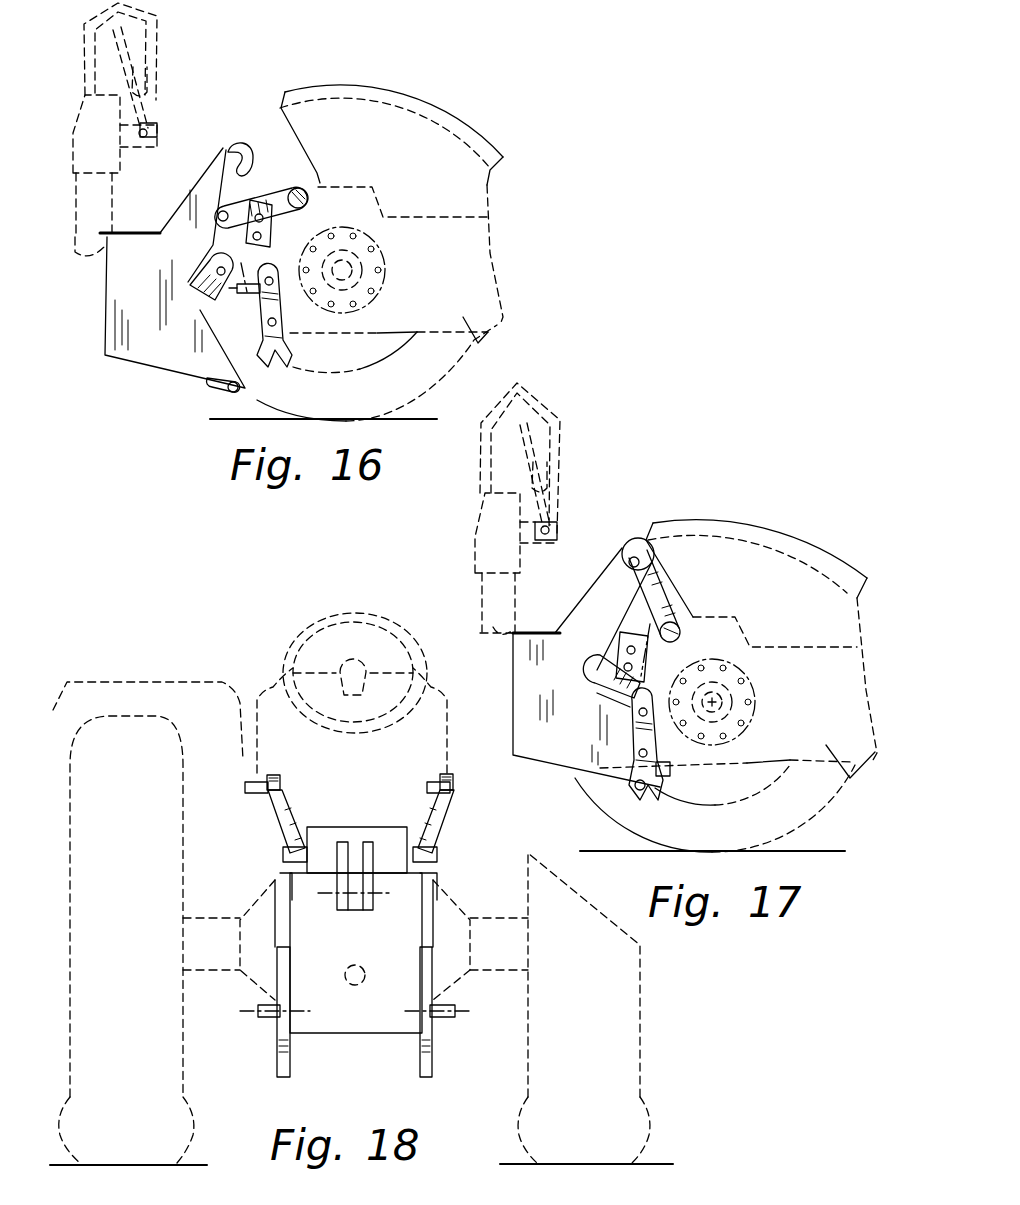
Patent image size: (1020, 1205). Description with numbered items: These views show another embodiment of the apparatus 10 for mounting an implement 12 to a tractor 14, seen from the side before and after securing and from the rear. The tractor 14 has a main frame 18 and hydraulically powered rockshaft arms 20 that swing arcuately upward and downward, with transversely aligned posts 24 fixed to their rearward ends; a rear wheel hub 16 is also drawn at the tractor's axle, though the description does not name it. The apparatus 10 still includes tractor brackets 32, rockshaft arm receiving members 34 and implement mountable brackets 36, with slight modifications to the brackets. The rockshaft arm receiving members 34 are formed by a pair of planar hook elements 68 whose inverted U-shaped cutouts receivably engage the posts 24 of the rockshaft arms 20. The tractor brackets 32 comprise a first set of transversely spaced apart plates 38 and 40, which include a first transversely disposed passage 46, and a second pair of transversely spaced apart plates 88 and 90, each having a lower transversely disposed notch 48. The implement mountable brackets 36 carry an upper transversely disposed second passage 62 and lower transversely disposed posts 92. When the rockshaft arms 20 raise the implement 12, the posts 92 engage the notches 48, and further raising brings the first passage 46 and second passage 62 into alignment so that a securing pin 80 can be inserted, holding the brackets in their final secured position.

In FIG. 16, the apparatus 10 is at (228, 78).
In FIG. 17, the apparatus 10 is at (637, 464).
In FIG. 16, the implement 12 is at (166, 85).
In FIG. 17, the implement 12 is at (567, 472).
In FIG. 16, the tractor 14 is at (418, 101).
In FIG. 17, the tractor 14 is at (800, 534).
In FIG. 18, the tractor 14 is at (230, 692).
In FIG. 16, the rear axle hub 16 is at (355, 272).
In FIG. 17, the rear axle hub 16 is at (735, 701).
In FIG. 18, the rear axle hub 16 is at (210, 917).
In FIG. 16, the main frame 18 is at (476, 352).
In FIG. 17, the main frame 18 is at (855, 782).
In FIG. 16, the rockshaft arms 20 is at (297, 182).
In FIG. 17, the rockshaft arms 20 is at (660, 590).
In FIG. 18, the rockshaft arms 20 is at (293, 826).
In FIG. 18, the posts 24 is at (250, 780).
In FIG. 16, the tractor brackets 32 is at (280, 248).
In FIG. 17, the tractor brackets 32 is at (653, 681).
In FIG. 18, the tractor brackets 32 is at (432, 870).
In FIG. 16, the rockshaft arm receiving members 34 is at (210, 189).
In FIG. 17, the rockshaft arm receiving members 34 is at (600, 562).
In FIG. 16, the implement mountable brackets 36 is at (185, 357).
In FIG. 17, the implement mountable brackets 36 is at (587, 736).
In FIG. 16, the plate 38 is at (318, 186).
In FIG. 17, the plate 38 is at (645, 632).
In FIG. 18, the plate 38 is at (390, 840).
In FIG. 18, the plate 40 is at (340, 862).
In FIG. 16, the first transversely disposed passage 46 is at (245, 230).
In FIG. 18, the first transversely disposed passage 46 is at (378, 878).
In FIG. 16, the lower transversely disposed notch 48 is at (276, 360).
In FIG. 17, the lower transversely disposed notch 48 is at (633, 765).
In FIG. 18, the lower transversely disposed notch 48 is at (277, 1058).
In FIG. 16, the second passage 62 is at (186, 270).
In FIG. 16, the hook elements 68 is at (236, 145).
In FIG. 17, the hook elements 68 is at (628, 537).
In FIG. 17, the securing pin 80 is at (613, 659).
In FIG. 16, the plate 88 is at (296, 338).
In FIG. 17, the plate 88 is at (665, 772).
In FIG. 18, the plate 88 is at (433, 1037).
In FIG. 18, the plate 90 is at (277, 1037).
In FIG. 16, the posts 92 is at (209, 383).
In FIG. 17, the posts 92 is at (640, 790).